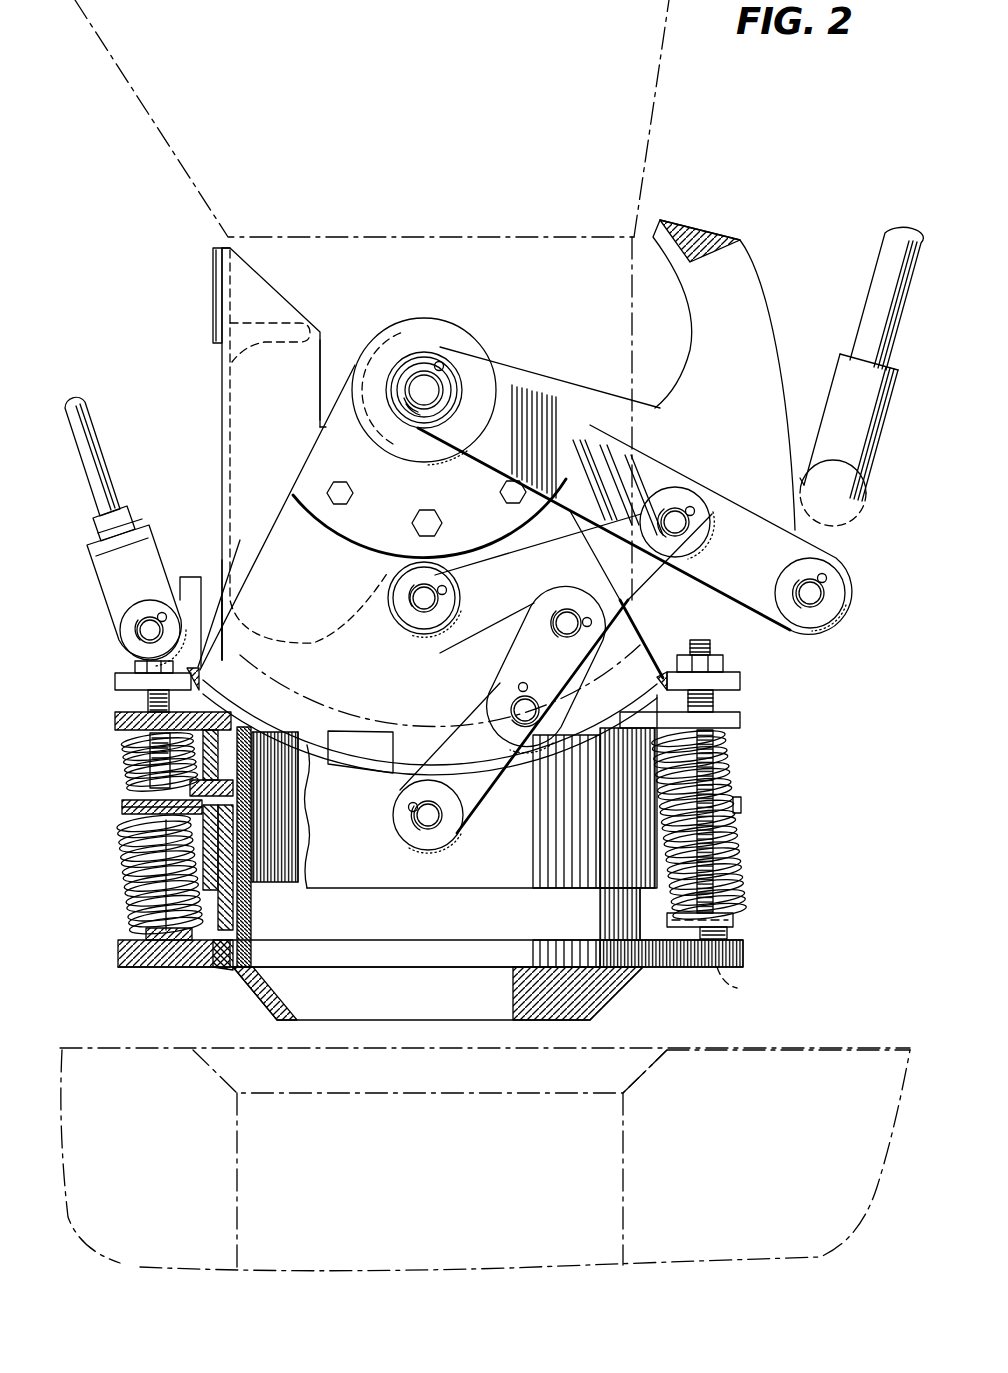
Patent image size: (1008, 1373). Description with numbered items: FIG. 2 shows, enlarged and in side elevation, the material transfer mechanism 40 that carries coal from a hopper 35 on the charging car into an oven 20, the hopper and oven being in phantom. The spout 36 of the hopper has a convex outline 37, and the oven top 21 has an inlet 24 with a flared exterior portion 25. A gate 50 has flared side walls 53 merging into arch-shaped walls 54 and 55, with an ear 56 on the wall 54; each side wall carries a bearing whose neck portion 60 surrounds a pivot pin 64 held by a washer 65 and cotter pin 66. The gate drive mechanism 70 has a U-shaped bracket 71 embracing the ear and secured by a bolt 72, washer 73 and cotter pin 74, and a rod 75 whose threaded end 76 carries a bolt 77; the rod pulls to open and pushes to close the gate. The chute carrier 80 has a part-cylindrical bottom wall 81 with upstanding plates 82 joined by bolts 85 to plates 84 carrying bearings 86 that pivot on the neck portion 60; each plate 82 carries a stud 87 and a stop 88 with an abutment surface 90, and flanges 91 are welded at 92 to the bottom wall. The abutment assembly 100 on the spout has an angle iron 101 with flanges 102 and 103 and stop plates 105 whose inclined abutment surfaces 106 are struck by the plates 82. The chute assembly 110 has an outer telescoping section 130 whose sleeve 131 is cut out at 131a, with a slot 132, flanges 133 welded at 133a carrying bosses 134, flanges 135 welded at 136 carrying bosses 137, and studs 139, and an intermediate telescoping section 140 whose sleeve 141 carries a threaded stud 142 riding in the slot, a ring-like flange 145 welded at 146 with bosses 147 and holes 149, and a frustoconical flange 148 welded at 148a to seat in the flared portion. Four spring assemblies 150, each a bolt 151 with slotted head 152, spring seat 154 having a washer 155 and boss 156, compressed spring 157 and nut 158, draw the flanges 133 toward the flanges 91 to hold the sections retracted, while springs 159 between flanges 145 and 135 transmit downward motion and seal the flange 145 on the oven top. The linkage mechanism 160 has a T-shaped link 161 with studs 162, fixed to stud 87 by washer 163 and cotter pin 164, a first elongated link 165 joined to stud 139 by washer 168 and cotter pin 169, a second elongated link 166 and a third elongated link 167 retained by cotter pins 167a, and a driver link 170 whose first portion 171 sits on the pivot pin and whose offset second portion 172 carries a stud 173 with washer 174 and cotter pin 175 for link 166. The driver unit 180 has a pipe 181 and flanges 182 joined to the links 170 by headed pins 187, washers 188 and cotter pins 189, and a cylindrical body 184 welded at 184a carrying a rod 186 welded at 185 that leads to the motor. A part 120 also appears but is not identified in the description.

The oven 20 is at (827, 1040).
The top 21 is at (745, 1072).
The inlet 24 is at (604, 1046).
The flared exterior portion 25 is at (645, 1068).
The hopper 35 is at (189, 144).
The spout 36 is at (646, 232).
The convex outline 37 is at (348, 694).
The material transfer mechanism 40 is at (826, 690).
The gate 50 is at (766, 290).
The side walls 53 is at (562, 380).
The arch-shaped wall 54 is at (700, 238).
The arch-shaped wall 55 is at (214, 602).
The ear 56 is at (188, 590).
The neck portion 60 is at (450, 357).
The pivot pin 64 is at (423, 372).
The washer 65 is at (458, 404).
The cotter pin 66 is at (441, 362).
The gate drive mechanism 70 is at (148, 445).
The U-shaped bracket 71 is at (145, 556).
The bolt 72 is at (147, 624).
The washer 73 is at (128, 624).
The cotter pin 74 is at (163, 612).
The rod 75 is at (82, 403).
The threaded end 76 is at (112, 518).
The bolt 77 is at (100, 538).
The chute carrier 80 is at (307, 460).
The bottom wall 81 is at (715, 699).
The upstanding plates 82 is at (561, 547).
The plates 84 is at (342, 407).
The bolts 85 is at (427, 518).
The bearing 86 is at (385, 335).
The stud 87 is at (440, 592).
The stop 88 is at (354, 740).
The abutment surface 90 is at (402, 742).
The flanges 91 is at (117, 680).
The weld 92 is at (205, 680).
The abutment assembly 100 is at (275, 288).
The angle iron 101 is at (225, 247).
The flange 102 is at (213, 275).
The flange 103 is at (230, 362).
The stop plates 105 is at (318, 379).
The inclined abutment surface 106 is at (300, 490).
The chute assembly 110 is at (645, 979).
The base plate 120 is at (258, 958).
The outer telescoping section 130 is at (715, 864).
The sleeve 131 is at (555, 869).
The cutout 131a is at (353, 776).
The slot 132 is at (252, 730).
The flanges 133 is at (117, 720).
The welding 133a is at (660, 735).
The bosses 134 is at (133, 743).
The flanges 135 is at (127, 801).
The welding 136 is at (157, 833).
The boss 137 is at (133, 820).
The stud 139 is at (445, 820).
The intermediate telescoping section 140 is at (187, 954).
The cylindrical sleeve 141 is at (230, 873).
The threaded stud 142 is at (190, 788).
The ring-like flange 145 is at (120, 966).
The weld 146 is at (226, 970).
The bosses 147 is at (137, 933).
The frustoconical flange 148 is at (510, 1004).
The weld 148a is at (215, 974).
The holes 149 is at (730, 975).
The spring assemblies 150 is at (756, 827).
The bolt 151 is at (150, 700).
The slotted head 152 is at (712, 645).
The spring seat 154 is at (746, 932).
The washer 155 is at (733, 922).
The boss 156 is at (722, 912).
The spring 157 is at (735, 838).
The nut 158 is at (133, 665).
The spring 159 is at (133, 864).
The linkage mechanism 160 is at (702, 446).
The T-shaped link 161 is at (492, 600).
The studs 162 is at (566, 699).
The washer 163 is at (419, 624).
The cotter pin 164 is at (416, 606).
The first elongated link 165 is at (497, 770).
The second elongated link 166 is at (622, 582).
The third elongated link 167 is at (562, 669).
The cotter pins 167a is at (556, 616).
The washer 168 is at (452, 832).
The cotter pin 169 is at (410, 813).
The driver link 170 is at (592, 430).
The first portion 171 is at (550, 430).
The second portion 172 is at (755, 545).
The stud 173 is at (692, 530).
The washer 174 is at (665, 497).
The cotter pin 175 is at (692, 511).
The driver unit 180 is at (884, 532).
The pipe 181 is at (855, 504).
The flanges 182 is at (845, 560).
The cylindrical body 184 is at (868, 447).
The weld 184a is at (809, 462).
The weld 185 is at (846, 360).
The rod 186 is at (887, 278).
The headed pins 187 is at (824, 600).
The washer 188 is at (828, 614).
The cotter pin 189 is at (814, 620).